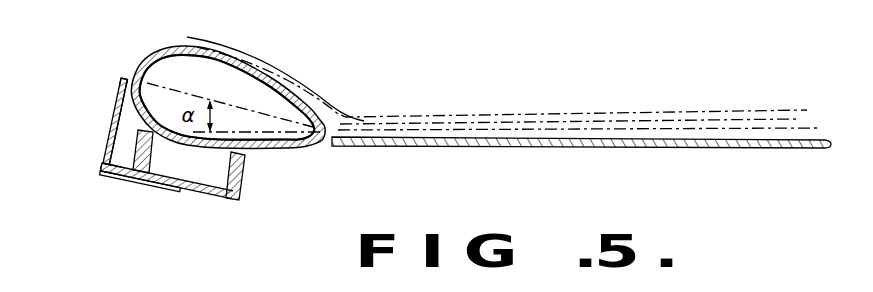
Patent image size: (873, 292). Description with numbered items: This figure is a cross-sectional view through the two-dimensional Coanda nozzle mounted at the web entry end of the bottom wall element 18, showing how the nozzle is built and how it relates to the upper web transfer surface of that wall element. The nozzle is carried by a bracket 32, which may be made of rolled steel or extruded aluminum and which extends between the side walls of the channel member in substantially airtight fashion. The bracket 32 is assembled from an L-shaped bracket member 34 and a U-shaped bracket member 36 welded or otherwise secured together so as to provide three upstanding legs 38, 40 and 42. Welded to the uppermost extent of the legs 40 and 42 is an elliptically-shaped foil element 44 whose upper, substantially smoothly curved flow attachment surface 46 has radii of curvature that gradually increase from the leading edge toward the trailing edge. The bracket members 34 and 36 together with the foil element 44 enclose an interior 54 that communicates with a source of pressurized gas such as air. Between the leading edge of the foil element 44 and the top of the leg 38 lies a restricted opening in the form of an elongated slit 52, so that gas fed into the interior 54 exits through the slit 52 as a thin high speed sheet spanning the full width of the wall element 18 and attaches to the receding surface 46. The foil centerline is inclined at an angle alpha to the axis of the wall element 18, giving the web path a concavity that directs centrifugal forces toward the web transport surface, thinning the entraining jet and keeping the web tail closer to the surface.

The wall element 18 is at (731, 150).
The bracket 32 is at (164, 195).
The L-shaped bracket member 34 is at (103, 166).
The U-shaped bracket member 36 is at (243, 190).
The upstanding leg 38 is at (118, 100).
The upstanding leg 40 is at (134, 158).
The upstanding leg 42 is at (247, 168).
The foil element 44 is at (245, 66).
The flow attachment surface 46 is at (183, 49).
The slit 52 is at (129, 76).
The interior 54 is at (116, 143).